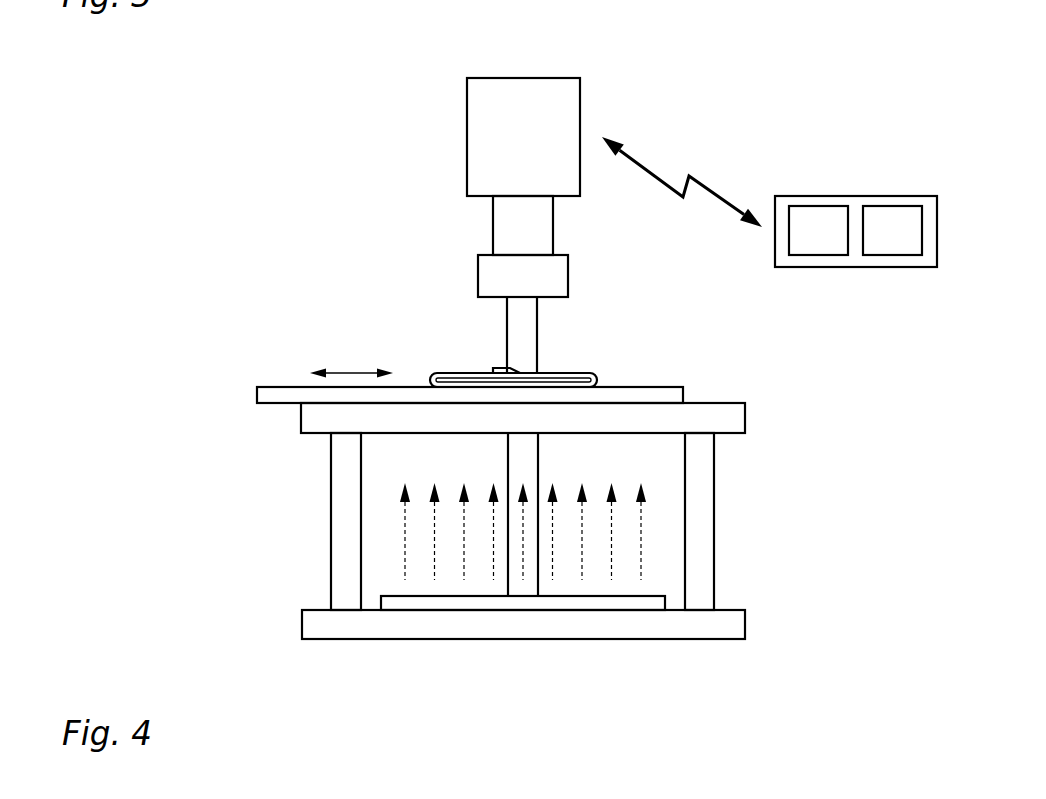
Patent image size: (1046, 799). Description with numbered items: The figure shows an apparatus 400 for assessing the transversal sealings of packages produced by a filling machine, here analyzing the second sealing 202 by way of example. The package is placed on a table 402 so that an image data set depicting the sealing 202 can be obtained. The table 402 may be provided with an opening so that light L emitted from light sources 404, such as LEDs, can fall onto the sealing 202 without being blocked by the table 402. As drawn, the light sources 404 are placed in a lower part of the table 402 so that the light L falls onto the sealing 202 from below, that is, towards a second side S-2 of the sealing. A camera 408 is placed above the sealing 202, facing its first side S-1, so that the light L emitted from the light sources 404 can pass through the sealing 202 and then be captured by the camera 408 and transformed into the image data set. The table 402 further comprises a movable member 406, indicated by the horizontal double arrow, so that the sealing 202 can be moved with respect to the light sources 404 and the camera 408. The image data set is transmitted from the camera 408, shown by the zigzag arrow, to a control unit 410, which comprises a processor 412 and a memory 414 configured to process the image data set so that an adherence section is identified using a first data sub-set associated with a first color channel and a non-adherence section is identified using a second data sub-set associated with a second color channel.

The apparatus 400 is at (667, 88).
The table 402 is at (730, 417).
The light sources 404 is at (653, 600).
The movable member 406 is at (270, 395).
The camera 408 is at (443, 77).
The control unit 410 is at (855, 204).
The processor 412 is at (819, 242).
The memory 414 is at (902, 242).
The second sealing 202 is at (592, 372).
The light L is at (642, 530).
The first side S-1 is at (564, 362).
The second side S-2 is at (555, 396).